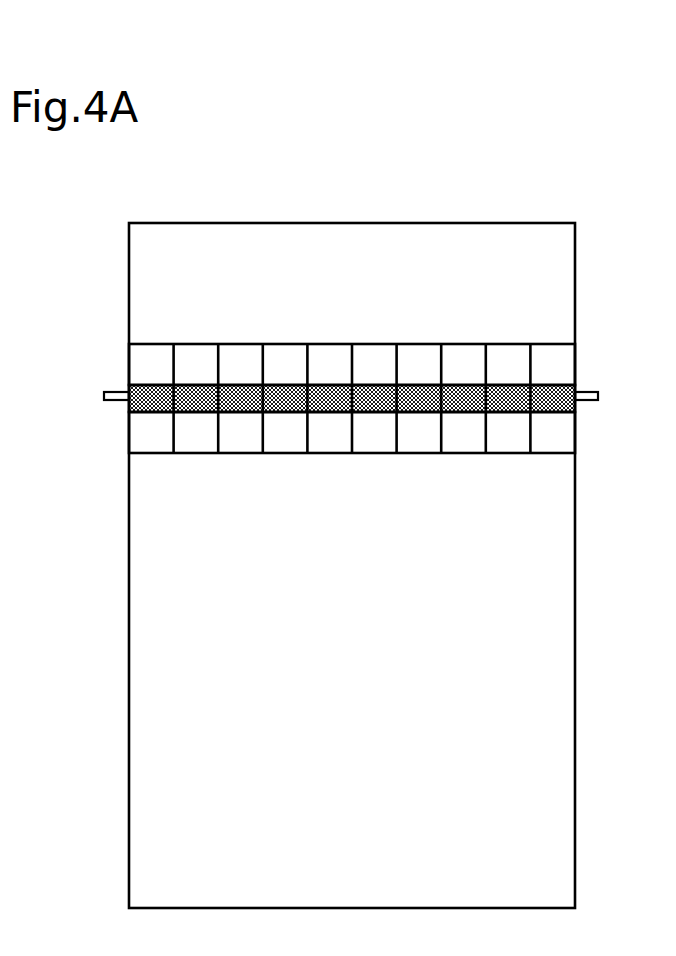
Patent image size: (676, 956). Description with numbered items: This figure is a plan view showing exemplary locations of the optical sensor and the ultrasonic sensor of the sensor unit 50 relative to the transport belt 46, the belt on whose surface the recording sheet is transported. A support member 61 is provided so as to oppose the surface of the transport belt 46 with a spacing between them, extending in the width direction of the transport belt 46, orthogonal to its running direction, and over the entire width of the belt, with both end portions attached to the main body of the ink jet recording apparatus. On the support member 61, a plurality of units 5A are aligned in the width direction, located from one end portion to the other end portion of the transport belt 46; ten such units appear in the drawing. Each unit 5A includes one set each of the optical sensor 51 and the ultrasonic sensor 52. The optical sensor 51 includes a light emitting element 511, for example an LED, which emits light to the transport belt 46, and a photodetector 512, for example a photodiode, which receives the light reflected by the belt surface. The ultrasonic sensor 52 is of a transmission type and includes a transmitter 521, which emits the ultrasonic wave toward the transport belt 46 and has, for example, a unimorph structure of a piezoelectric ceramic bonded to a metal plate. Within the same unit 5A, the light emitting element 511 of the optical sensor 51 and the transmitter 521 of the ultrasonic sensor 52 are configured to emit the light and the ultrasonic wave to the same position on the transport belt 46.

The unit 5A is at (158, 256).
The transport belt 46 is at (576, 236).
The sensor unit 50 is at (346, 436).
The optical sensor 51 is at (150, 350).
The light emitting element 511 is at (147, 364).
The photodetector 512 is at (146, 440).
The ultrasonic sensor 52 is at (306, 488).
The transmitter 521 is at (143, 398).
The support member 61 is at (113, 392).